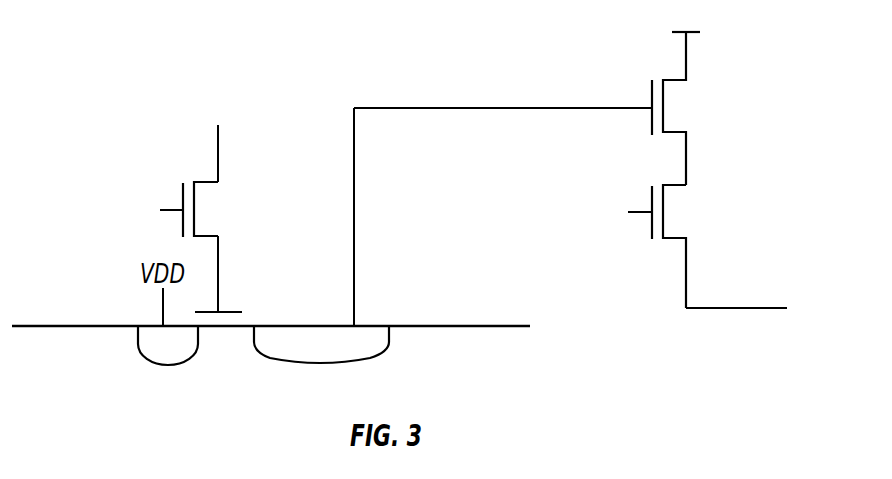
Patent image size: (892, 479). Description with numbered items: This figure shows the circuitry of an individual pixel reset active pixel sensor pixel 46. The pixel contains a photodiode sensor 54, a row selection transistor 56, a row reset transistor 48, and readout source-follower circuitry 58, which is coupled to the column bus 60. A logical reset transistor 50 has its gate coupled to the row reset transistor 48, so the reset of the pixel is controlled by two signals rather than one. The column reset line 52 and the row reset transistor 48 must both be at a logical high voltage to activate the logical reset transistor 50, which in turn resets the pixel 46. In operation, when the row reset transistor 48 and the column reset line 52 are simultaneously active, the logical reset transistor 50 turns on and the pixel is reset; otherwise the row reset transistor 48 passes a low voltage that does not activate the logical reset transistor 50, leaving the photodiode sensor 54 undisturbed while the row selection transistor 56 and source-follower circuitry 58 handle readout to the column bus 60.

The individual pixel reset APS pixel 46 is at (143, 62).
The row reset transistor 48 is at (181, 223).
The logical reset transistor 50 is at (218, 248).
The column reset line 52 is at (218, 150).
The photodiode sensor 54 is at (392, 358).
The row selection transistor 56 is at (650, 232).
The readout source-follower circuitry 58 is at (713, 113).
The column bus 60 is at (720, 308).